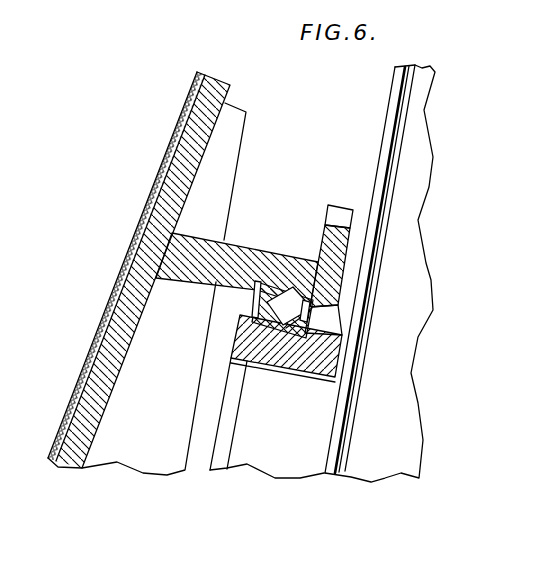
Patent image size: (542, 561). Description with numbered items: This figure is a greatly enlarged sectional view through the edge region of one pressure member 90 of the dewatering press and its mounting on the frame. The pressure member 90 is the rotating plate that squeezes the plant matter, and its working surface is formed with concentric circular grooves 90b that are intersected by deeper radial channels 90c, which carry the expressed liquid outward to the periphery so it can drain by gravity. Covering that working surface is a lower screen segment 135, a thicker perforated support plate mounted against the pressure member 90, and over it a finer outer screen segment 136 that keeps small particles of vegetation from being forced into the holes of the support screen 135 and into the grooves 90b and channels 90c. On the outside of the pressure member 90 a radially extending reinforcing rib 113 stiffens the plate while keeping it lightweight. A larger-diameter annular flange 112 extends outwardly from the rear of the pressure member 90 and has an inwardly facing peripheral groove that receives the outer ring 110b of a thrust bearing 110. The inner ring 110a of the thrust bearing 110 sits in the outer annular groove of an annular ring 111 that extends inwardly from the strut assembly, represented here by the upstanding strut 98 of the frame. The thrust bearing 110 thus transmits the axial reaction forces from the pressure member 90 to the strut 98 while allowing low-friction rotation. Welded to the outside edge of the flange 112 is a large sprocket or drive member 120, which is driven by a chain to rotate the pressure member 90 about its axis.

The pressure member 90 is at (222, 92).
The circular groove 90b is at (63, 438).
The channel 90c is at (92, 372).
The outer screen segment 136 is at (163, 153).
The lower screen segment 135 is at (147, 211).
The reinforcing rib 113 is at (232, 148).
The annular flange 112 is at (230, 244).
The thrust bearing 110 is at (253, 290).
The inner ring of thrust bearing 110a is at (255, 337).
The outer ring of thrust bearing 110b is at (271, 282).
The drive member 120 is at (339, 207).
The upstanding strut 98 is at (393, 103).
The annular ring 111 is at (315, 366).